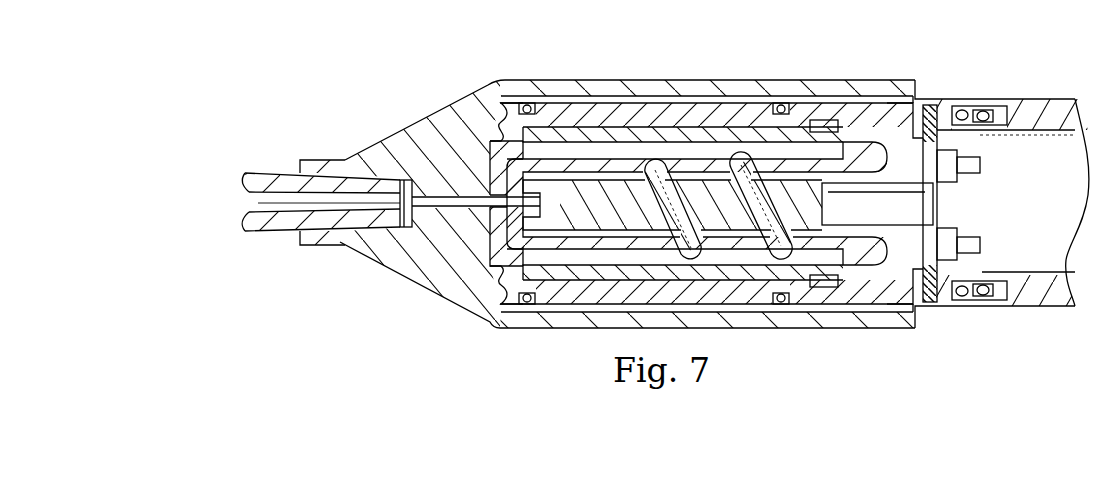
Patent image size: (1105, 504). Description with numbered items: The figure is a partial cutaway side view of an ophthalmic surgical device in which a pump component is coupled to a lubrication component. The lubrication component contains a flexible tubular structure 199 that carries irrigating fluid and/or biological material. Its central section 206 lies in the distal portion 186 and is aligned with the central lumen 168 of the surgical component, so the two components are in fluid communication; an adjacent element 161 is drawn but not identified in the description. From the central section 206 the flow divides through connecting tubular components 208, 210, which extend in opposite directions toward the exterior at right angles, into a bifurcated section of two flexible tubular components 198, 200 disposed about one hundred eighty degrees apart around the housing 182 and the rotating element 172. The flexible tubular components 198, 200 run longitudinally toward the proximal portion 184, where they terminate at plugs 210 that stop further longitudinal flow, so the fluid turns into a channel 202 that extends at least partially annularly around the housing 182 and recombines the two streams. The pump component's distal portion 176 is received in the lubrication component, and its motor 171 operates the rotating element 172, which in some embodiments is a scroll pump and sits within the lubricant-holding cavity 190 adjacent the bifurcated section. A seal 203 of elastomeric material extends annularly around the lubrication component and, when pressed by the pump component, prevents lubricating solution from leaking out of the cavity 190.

The cable jacket 161 is at (280, 222).
The central lumen 168 is at (253, 203).
The motor 171 is at (1042, 220).
The rotating element 172 is at (707, 185).
The distal portion 176 is at (1045, 99).
The housing 182 is at (745, 88).
The proximal portion 184 is at (917, 92).
The distal portion 186 is at (313, 160).
The cavity 190 is at (642, 168).
The flexible tubular component 198 is at (568, 144).
The flexible tubular structure 199 is at (492, 130).
The flexible tubular component 200 is at (512, 298).
The channel 202 is at (825, 128).
The seal 203 is at (948, 120).
The central section 206 is at (437, 204).
The connecting tubular component 208 is at (490, 191).
The connecting tubular component 210 is at (920, 135).